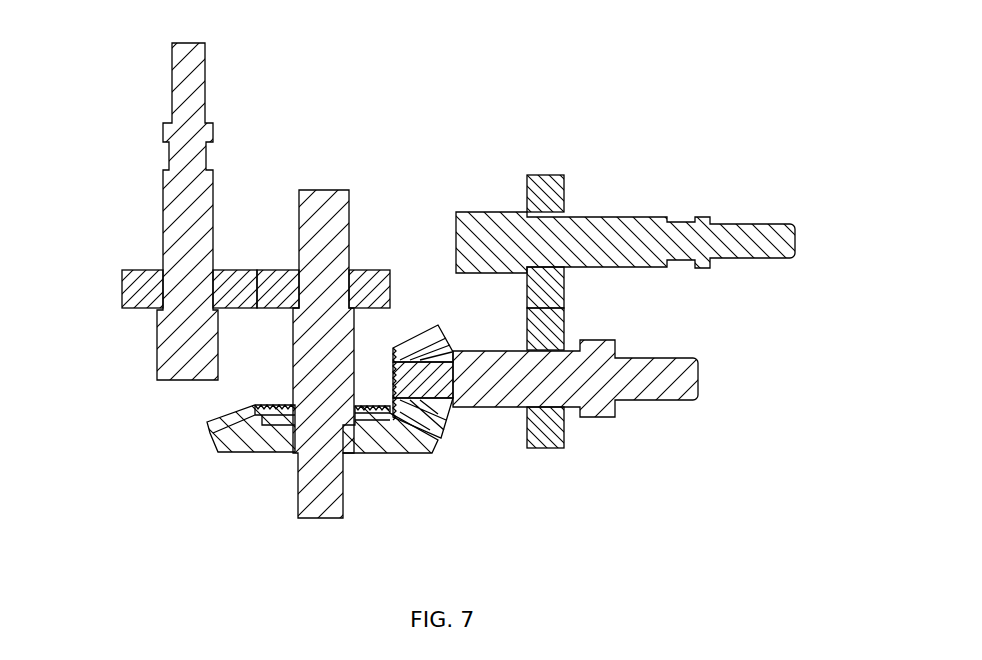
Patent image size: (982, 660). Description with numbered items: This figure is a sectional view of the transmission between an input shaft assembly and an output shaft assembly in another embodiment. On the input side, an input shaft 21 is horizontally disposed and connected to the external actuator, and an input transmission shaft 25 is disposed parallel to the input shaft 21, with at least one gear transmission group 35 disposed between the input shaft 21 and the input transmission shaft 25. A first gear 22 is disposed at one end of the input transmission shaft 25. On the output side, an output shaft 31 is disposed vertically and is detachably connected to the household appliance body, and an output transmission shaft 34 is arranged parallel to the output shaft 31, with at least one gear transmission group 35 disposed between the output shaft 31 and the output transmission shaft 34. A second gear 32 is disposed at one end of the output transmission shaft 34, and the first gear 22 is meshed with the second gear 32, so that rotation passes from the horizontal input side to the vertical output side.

The input shaft 21 is at (623, 240).
The first gear 22 is at (423, 420).
The input transmission shaft 25 is at (657, 360).
The output shaft 31 is at (200, 222).
The second gear 32 is at (258, 442).
The output transmission shaft 34 is at (322, 212).
The gear transmission group 35 is at (273, 270).